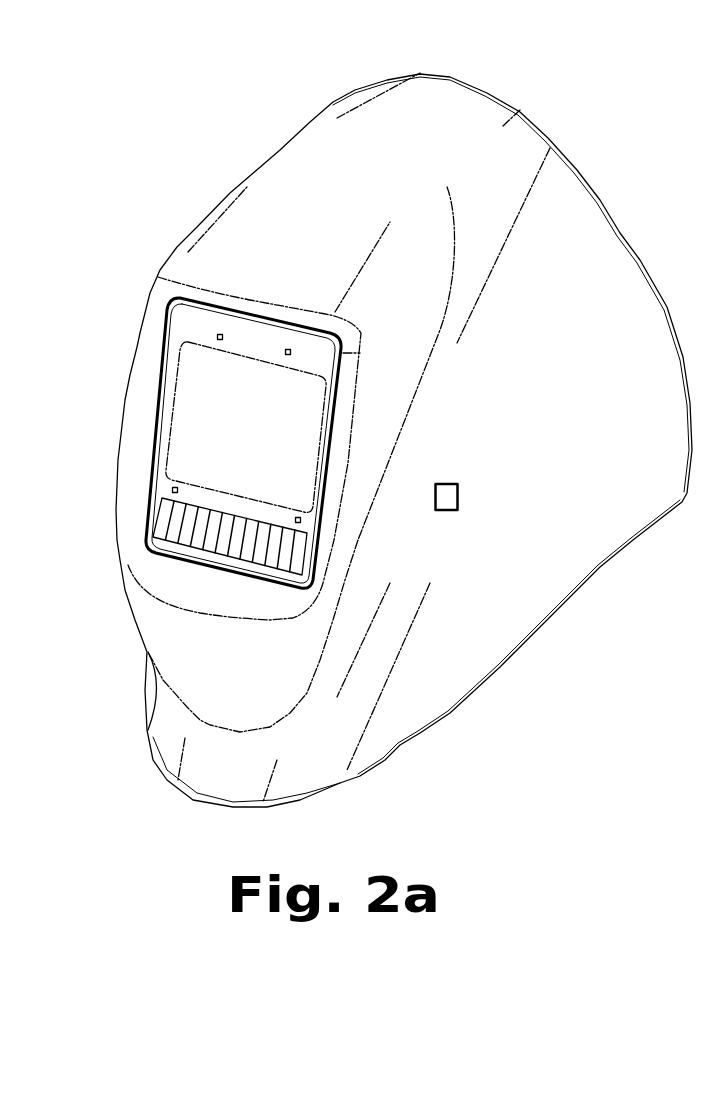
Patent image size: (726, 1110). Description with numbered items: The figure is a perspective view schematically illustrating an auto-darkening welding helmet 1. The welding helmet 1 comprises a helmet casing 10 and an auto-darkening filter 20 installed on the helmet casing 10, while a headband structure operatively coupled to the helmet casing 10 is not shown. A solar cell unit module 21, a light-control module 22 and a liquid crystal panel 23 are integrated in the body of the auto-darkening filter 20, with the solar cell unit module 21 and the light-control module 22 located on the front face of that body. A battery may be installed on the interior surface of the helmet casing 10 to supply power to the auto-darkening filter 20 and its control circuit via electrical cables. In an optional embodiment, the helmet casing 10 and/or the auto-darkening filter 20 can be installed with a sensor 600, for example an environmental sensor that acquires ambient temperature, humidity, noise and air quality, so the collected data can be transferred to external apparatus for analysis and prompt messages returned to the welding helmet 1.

The auto-darkening welding helmet 1 is at (318, 74).
The helmet casing 10 is at (482, 200).
The auto-darkening filter 20 is at (177, 327).
The solar cell unit module 21 is at (160, 523).
The light-control module 22 is at (217, 340).
The liquid crystal panel 23 is at (246, 427).
The sensor 600 is at (458, 484).